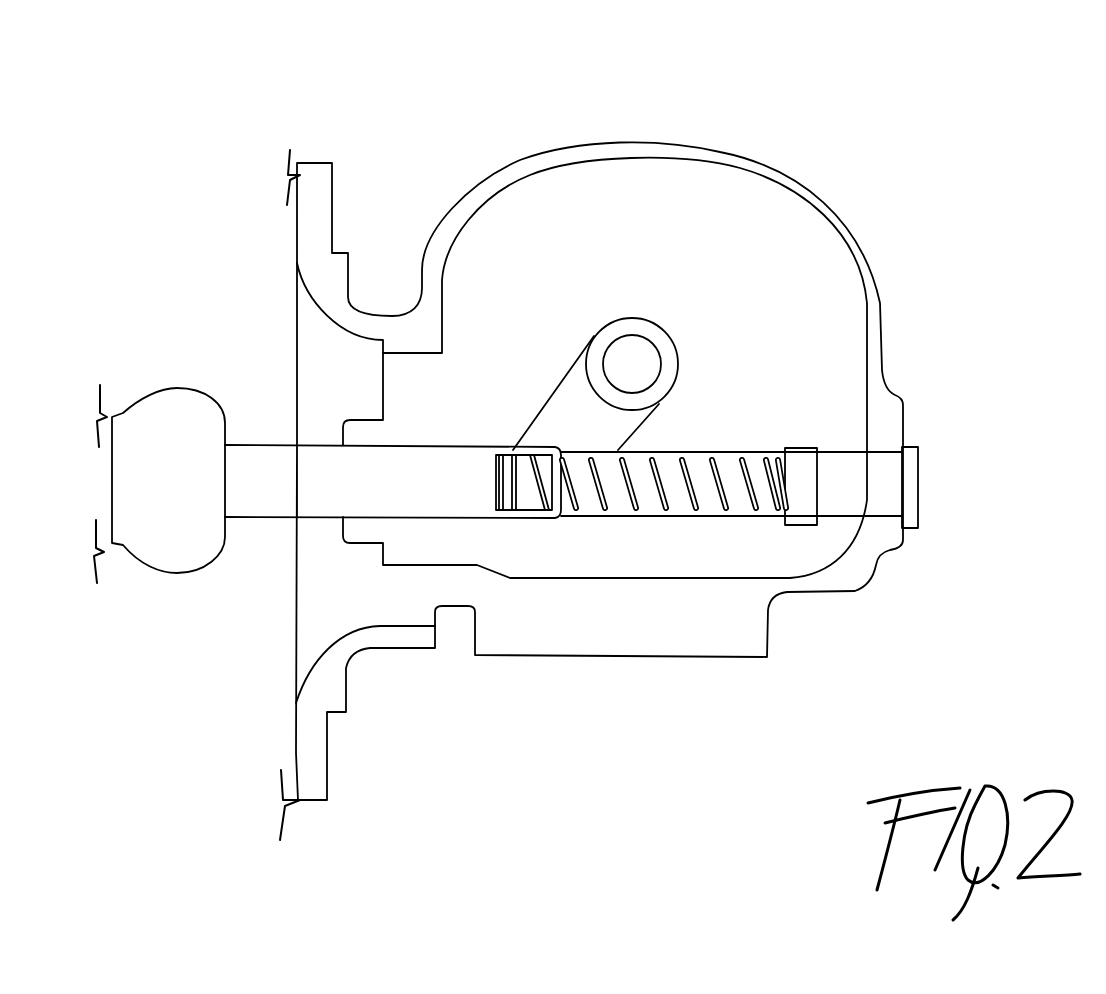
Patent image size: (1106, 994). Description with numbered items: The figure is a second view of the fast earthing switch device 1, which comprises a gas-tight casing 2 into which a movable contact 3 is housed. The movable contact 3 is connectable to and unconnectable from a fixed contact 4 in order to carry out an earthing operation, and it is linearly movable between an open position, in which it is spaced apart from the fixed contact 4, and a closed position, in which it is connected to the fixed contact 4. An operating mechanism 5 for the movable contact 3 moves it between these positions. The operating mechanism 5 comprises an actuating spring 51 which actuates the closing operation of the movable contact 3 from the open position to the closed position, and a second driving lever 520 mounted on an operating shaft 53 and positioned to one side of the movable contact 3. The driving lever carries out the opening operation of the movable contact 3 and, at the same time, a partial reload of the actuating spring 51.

The fast earthing switch device 1 is at (905, 127).
The gas-tight casing 2 is at (660, 150).
The movable contact 3 is at (252, 453).
The fixed contact 4 is at (157, 548).
The operating mechanism 5 is at (740, 376).
The actuating spring 51 is at (693, 518).
The second driving lever 520 is at (563, 393).
The operating shaft 53 is at (645, 350).